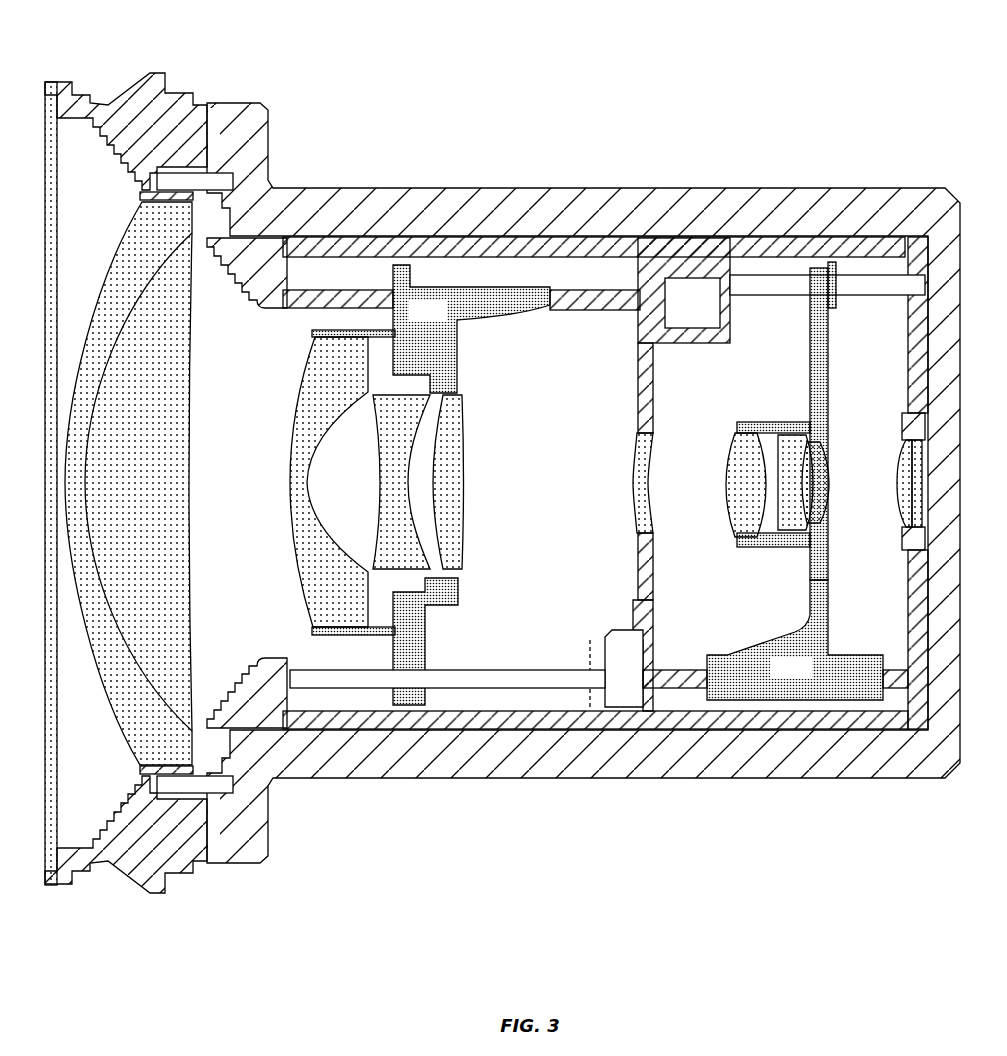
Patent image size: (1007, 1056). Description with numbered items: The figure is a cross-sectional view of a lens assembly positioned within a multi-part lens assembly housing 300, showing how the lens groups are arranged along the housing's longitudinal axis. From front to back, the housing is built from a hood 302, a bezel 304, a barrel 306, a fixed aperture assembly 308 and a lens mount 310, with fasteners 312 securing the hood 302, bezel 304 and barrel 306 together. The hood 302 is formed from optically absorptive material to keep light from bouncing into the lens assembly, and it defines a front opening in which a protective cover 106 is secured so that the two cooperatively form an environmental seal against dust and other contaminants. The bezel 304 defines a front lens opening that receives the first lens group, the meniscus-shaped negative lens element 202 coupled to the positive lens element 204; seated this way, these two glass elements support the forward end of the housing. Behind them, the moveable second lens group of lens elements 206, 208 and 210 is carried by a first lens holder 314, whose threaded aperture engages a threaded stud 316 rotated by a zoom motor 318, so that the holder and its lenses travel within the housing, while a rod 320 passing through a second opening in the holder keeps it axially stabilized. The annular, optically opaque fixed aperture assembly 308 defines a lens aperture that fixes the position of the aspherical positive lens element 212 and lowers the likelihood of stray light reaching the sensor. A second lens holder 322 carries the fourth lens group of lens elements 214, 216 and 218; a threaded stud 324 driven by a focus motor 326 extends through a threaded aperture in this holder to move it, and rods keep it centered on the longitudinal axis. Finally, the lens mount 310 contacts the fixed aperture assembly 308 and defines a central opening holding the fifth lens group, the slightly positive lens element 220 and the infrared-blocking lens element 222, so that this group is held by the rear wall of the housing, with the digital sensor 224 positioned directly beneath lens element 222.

The protective cover 106 is at (60, 232).
The meniscus-shaped negative lens element 202 is at (140, 250).
The positive lens element 204 is at (150, 310).
The negative lens element 206 is at (320, 385).
The aspherical negative lens element 208 is at (383, 422).
The positive lens element 210 is at (453, 396).
The aspherical positive lens element 212 is at (634, 505).
The aspherical positive lens element 214 is at (740, 434).
The negative lens element 216 is at (786, 431).
The positive lens element 218 is at (834, 525).
The slightly positive lens element 220 is at (908, 448).
The lens element with infrared light blocking coating 222 is at (908, 509).
The digital sensor 224 is at (904, 483).
The lens assembly housing 300 is at (836, 118).
The hood 302 is at (133, 93).
The bezel 304 is at (357, 236).
The barrel 306 is at (530, 188).
The fixed aperture assembly 308 is at (706, 236).
The lens mount 310 is at (918, 238).
The fasteners 312 is at (223, 133).
The first lens holder 314 is at (413, 320).
The threaded stud 316 is at (590, 311).
The zoom motor 318 is at (677, 307).
The rod 320 is at (467, 668).
The second lens holder 322 is at (775, 678).
The threaded stud 324 is at (678, 668).
The focus motor 326 is at (622, 670).